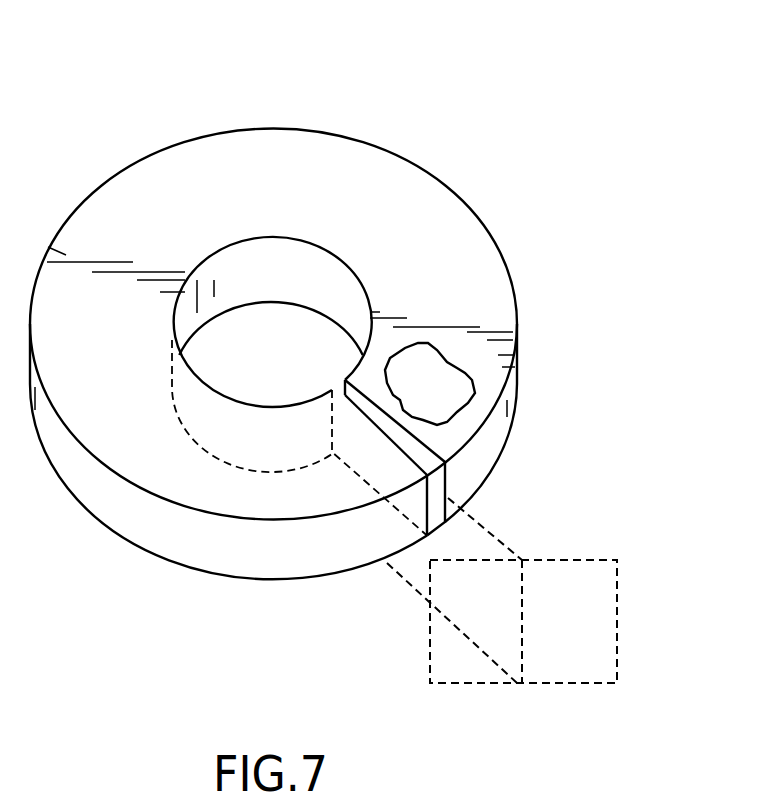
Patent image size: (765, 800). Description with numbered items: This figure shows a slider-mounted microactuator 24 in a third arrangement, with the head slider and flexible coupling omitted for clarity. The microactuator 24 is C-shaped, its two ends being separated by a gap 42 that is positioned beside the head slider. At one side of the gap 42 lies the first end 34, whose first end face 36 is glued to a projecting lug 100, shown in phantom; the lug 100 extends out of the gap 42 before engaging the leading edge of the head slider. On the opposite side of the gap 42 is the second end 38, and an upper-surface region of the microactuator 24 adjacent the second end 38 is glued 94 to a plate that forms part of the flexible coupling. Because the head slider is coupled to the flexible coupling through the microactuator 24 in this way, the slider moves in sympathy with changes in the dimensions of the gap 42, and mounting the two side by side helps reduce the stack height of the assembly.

The microactuator 24 is at (383, 149).
The glue 94 is at (472, 375).
The second end 38 is at (448, 438).
The gap 42 is at (440, 465).
The slot side wall 34 is at (417, 482).
The first end face 36 is at (373, 462).
The projecting lug 100 is at (492, 532).